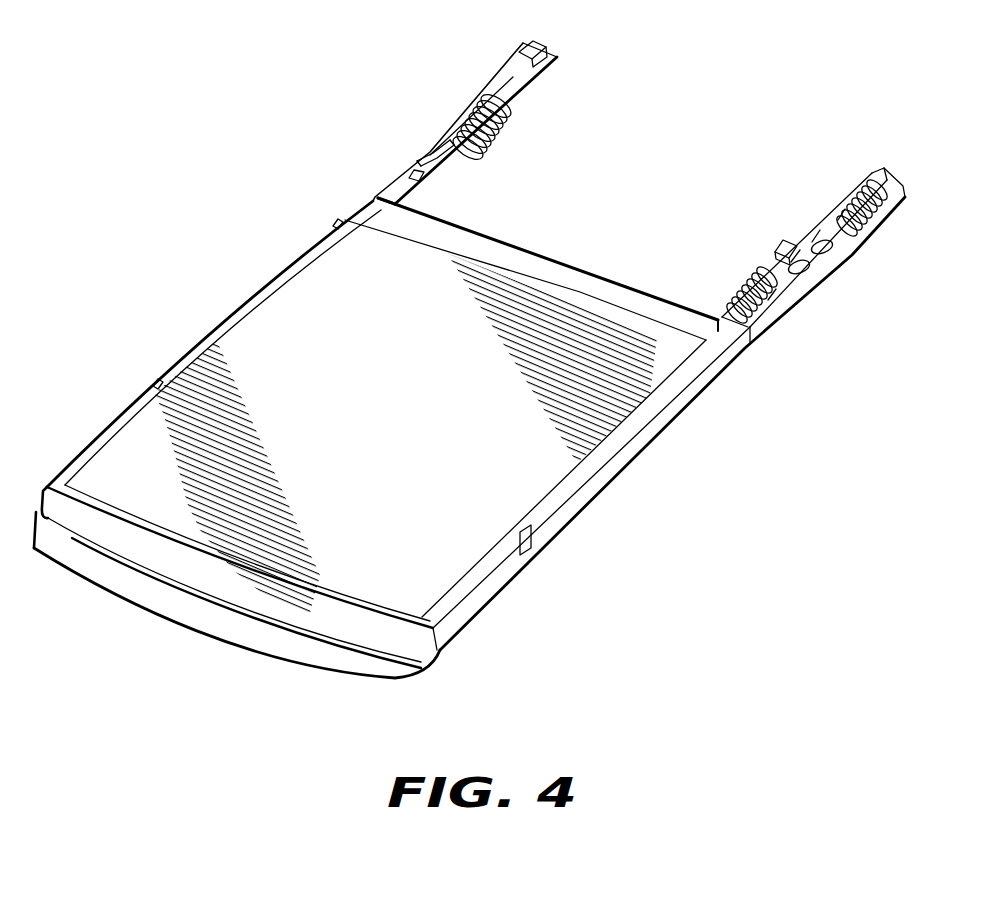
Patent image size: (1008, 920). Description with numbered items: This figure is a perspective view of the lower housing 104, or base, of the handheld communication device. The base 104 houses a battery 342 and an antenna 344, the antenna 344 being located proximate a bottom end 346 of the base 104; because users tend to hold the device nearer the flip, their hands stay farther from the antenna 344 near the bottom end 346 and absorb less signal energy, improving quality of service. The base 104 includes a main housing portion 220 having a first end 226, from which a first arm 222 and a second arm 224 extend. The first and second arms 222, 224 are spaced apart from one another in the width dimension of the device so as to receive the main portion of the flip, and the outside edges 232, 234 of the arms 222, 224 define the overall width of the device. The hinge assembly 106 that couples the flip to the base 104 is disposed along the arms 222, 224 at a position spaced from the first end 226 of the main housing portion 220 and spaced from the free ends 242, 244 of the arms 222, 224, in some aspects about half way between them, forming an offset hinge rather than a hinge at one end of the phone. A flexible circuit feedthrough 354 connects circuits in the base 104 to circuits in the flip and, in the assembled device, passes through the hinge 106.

The lower housing 104 is at (469, 395).
The hinge assembly 106 is at (766, 245).
The main housing portion 220 is at (274, 327).
The first arm 222 is at (461, 103).
The second arm 224 is at (832, 224).
The first end 226 is at (580, 270).
The outside edge 232 is at (421, 165).
The outside edge 234 is at (813, 219).
The free end 242 is at (553, 45).
The free end 244 is at (890, 172).
The battery 342 is at (428, 460).
The antenna 344 is at (228, 578).
The bottom end 346 is at (316, 683).
The flexible circuit feedthrough 354 is at (478, 133).